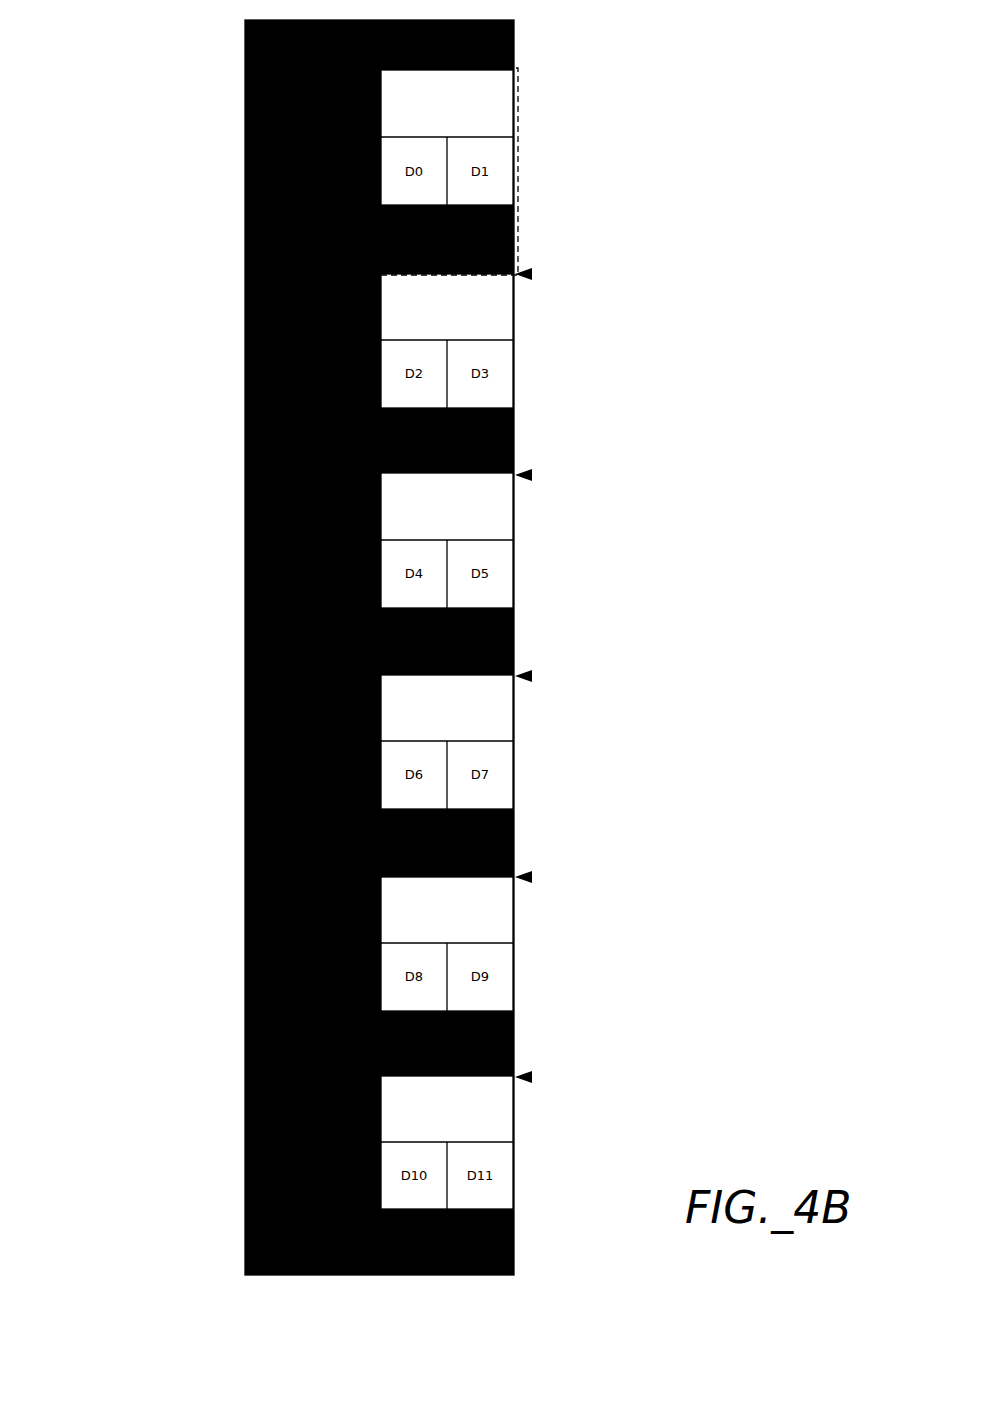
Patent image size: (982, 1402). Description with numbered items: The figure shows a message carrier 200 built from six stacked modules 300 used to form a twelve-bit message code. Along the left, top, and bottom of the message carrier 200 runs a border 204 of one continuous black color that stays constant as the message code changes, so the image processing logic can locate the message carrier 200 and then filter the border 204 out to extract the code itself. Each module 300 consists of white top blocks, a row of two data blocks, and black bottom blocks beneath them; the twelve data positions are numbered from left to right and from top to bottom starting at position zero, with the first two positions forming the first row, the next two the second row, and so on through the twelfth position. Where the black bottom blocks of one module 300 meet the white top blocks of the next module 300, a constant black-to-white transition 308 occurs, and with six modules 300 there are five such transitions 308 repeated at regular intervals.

The message carrier 200 is at (142, 116).
The border 204 is at (245, 418).
The module 300 is at (518, 113).
The black-to-white transition 308 is at (530, 273).